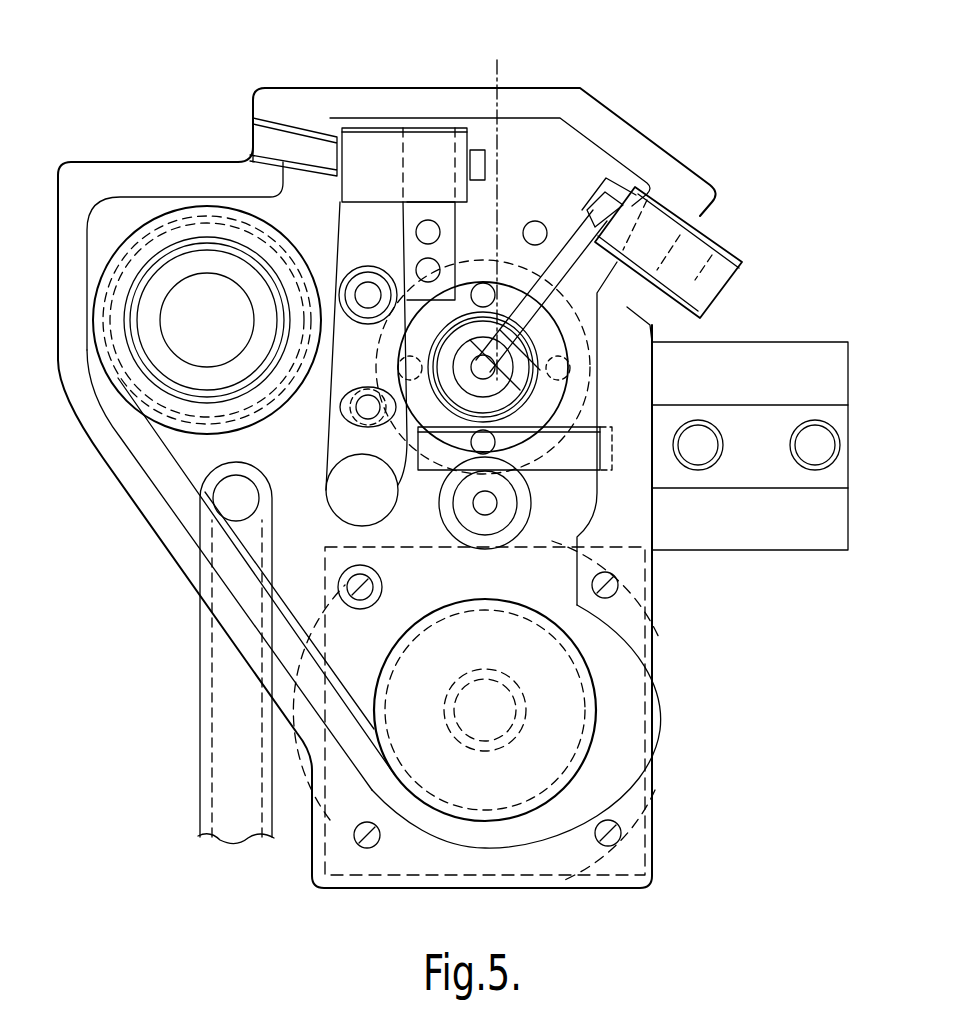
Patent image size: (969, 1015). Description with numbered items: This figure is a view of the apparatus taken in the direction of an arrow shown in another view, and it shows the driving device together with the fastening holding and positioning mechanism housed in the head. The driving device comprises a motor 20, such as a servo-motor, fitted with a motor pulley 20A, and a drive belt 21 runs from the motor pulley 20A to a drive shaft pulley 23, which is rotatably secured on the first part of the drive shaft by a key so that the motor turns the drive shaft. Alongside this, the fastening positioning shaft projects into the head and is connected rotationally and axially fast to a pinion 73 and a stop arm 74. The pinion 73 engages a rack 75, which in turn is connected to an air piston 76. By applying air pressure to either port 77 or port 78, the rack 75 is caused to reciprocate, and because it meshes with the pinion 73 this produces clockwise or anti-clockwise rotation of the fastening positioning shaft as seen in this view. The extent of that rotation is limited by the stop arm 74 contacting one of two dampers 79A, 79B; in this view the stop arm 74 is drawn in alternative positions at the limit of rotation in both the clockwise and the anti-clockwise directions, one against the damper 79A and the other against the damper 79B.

The motor 20 is at (625, 783).
The motor pulley 20A is at (573, 692).
The drive belt 21 is at (183, 470).
The drive shaft pulley 23 is at (107, 447).
The pinion 73 is at (540, 355).
The stop arm 74 is at (487, 130).
The rack 75 is at (588, 428).
The air piston 76 is at (768, 475).
The port 77 is at (817, 460).
The port 78 is at (697, 460).
The damper 79A is at (430, 138).
The damper 79B is at (713, 240).